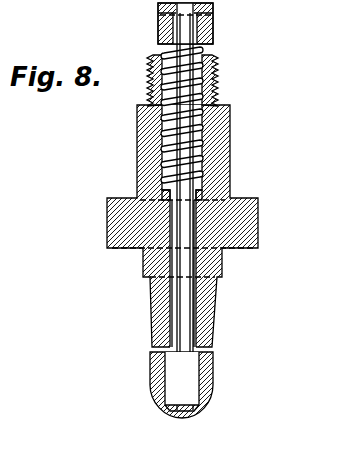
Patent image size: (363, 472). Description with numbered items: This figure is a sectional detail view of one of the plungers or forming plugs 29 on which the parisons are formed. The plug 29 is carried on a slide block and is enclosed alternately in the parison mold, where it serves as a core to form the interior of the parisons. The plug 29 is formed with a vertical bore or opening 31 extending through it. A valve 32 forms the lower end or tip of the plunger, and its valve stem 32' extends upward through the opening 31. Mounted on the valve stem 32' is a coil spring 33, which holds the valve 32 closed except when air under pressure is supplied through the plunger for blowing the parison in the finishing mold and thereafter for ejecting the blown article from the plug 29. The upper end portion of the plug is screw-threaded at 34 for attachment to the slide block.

The plunger or forming plug 29 is at (227, 160).
The vertical bore or opening 31 is at (193, 303).
The valve 32 is at (204, 385).
The valve stem 32' is at (221, 273).
The coil spring 33 is at (203, 128).
The screw-threaded upper end portion 34 is at (216, 80).